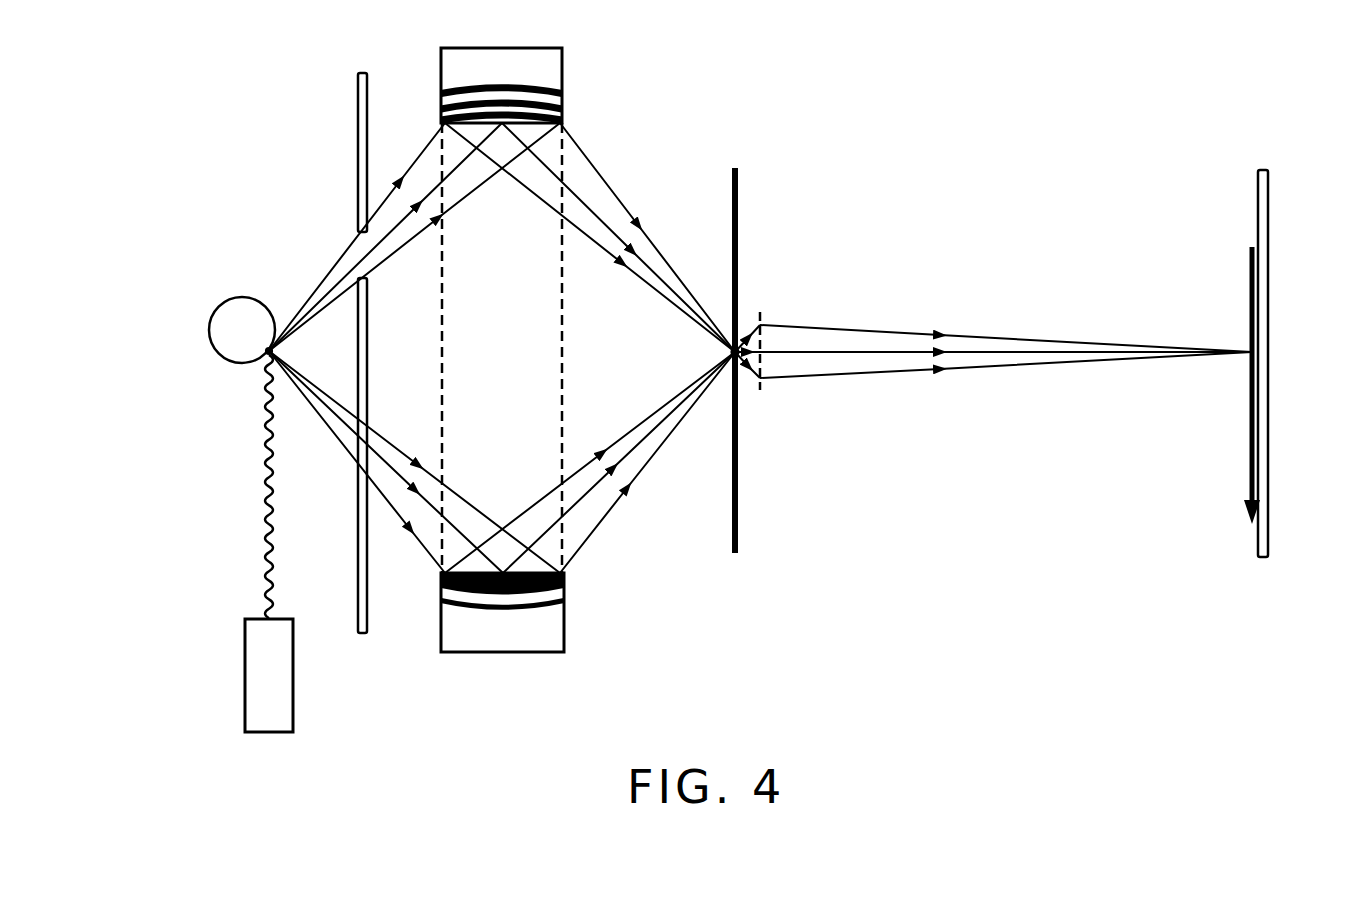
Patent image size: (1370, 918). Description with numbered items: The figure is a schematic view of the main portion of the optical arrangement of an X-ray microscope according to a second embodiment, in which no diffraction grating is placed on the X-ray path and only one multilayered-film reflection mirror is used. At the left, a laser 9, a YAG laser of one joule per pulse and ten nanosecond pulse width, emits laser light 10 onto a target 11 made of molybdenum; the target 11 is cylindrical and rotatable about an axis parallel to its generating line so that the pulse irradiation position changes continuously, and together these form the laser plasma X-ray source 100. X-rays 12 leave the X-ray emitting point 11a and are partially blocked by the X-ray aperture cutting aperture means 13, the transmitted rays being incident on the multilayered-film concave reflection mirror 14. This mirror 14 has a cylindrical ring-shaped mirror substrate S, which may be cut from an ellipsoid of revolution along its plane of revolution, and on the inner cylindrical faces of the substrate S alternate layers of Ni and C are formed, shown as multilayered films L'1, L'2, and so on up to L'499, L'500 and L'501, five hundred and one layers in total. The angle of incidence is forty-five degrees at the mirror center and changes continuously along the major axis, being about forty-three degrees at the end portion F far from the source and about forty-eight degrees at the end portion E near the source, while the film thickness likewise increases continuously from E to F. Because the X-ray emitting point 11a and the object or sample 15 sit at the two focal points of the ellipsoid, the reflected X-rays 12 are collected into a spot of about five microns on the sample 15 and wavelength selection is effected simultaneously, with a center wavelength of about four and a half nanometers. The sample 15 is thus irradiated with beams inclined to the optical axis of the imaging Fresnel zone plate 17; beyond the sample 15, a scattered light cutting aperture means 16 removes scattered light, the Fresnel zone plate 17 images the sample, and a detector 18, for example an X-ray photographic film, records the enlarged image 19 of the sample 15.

The laser 9 is at (245, 668).
The laser light 10 is at (262, 445).
The target 11 is at (219, 304).
The X-ray emitting point 11a is at (279, 352).
The X-rays 12 is at (376, 432).
The X-ray aperture cutting aperture means 13 is at (358, 520).
The multilayered-film concave reflection mirror 14 is at (553, 352).
The object (sample) to be observed 15 is at (740, 344).
The scattered light cutting aperture means 16 is at (740, 229).
The imaging Fresnel zone plate 17 is at (762, 391).
The detector 18 is at (1270, 276).
The enlarged image 19 is at (1250, 385).
The laser plasma X-ray source 100 is at (129, 397).
The mirror substrate S is at (548, 72).
The end portion near the X-ray source E is at (455, 351).
The end portion far from the X-ray source F is at (548, 350).
The multilayered film L'501 is at (610, 554).
The multilayered film L'500 is at (619, 574).
The multilayered film L'499 is at (619, 603).
The multilayered film L'2 is at (620, 624).
The multilayered film L'1 is at (597, 634).